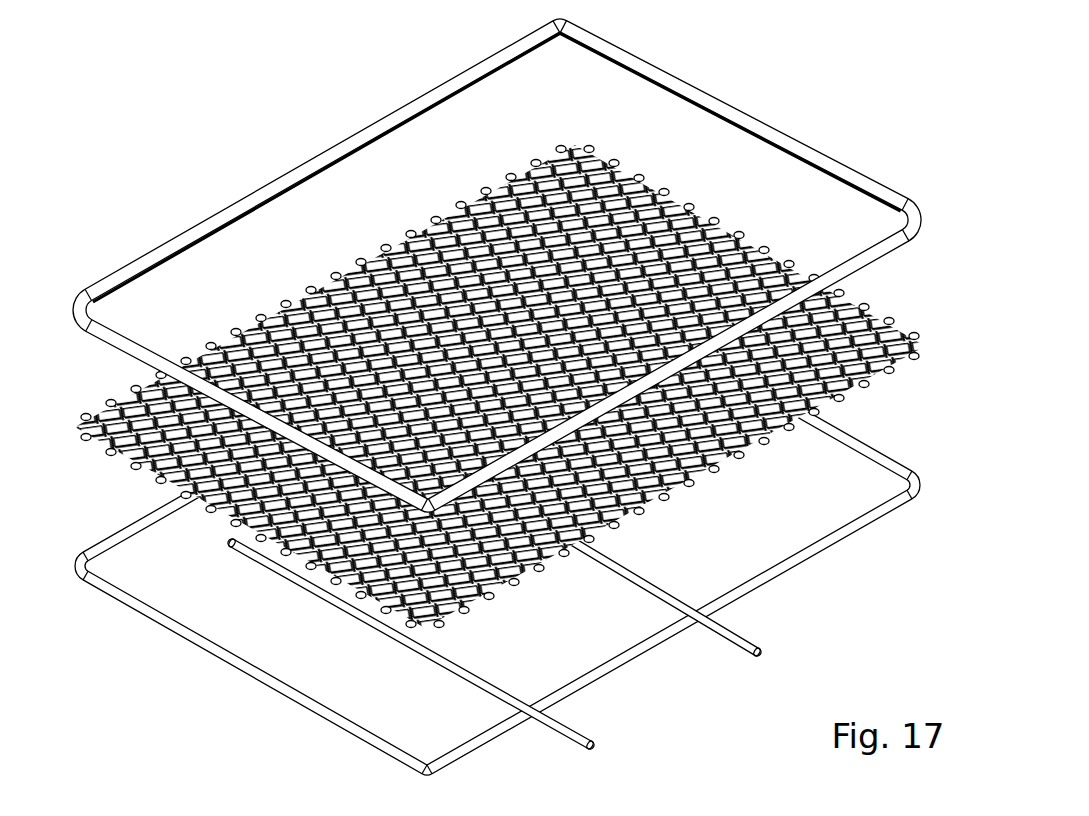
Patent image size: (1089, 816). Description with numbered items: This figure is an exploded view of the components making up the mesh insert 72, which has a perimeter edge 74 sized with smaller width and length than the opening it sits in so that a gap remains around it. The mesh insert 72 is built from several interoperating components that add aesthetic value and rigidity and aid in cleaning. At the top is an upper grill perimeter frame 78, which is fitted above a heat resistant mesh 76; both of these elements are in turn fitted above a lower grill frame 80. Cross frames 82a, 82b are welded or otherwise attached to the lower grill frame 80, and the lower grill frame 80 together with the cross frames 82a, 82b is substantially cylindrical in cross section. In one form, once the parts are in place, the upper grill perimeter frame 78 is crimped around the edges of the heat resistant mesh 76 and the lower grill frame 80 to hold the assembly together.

The mesh insert 72 is at (573, 407).
The perimeter edge 74 is at (497, 265).
The heat resistant mesh 76 is at (537, 386).
The upper grill perimeter frame 78 is at (526, 168).
The lower grill frame 80 is at (517, 525).
The cross frame 82a is at (653, 577).
The cross frame 82b is at (435, 646).